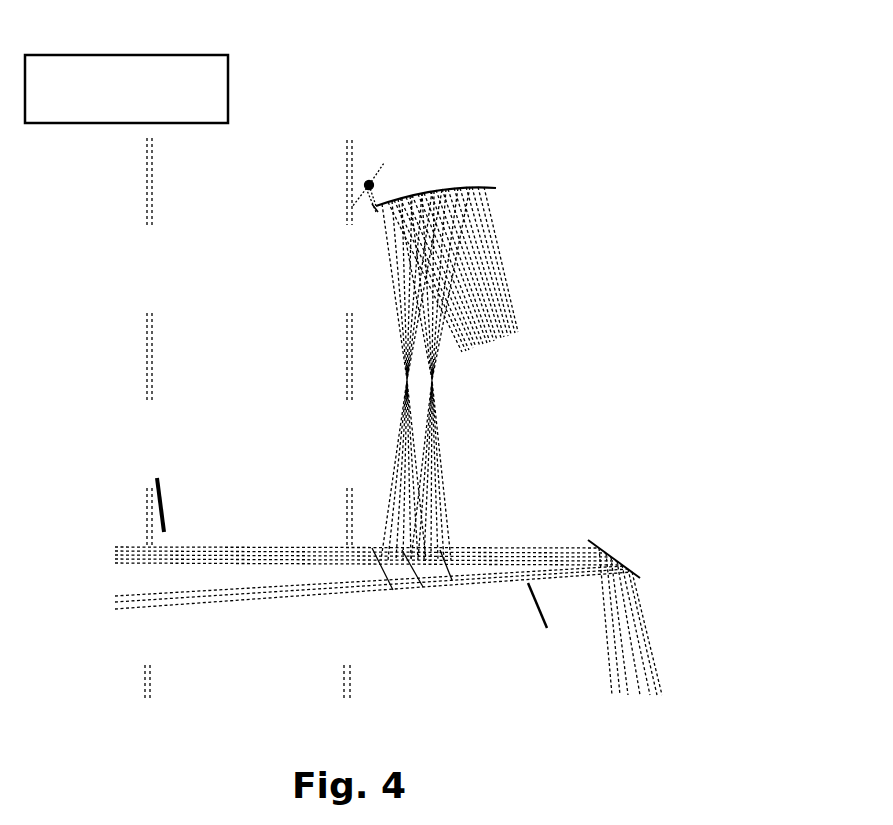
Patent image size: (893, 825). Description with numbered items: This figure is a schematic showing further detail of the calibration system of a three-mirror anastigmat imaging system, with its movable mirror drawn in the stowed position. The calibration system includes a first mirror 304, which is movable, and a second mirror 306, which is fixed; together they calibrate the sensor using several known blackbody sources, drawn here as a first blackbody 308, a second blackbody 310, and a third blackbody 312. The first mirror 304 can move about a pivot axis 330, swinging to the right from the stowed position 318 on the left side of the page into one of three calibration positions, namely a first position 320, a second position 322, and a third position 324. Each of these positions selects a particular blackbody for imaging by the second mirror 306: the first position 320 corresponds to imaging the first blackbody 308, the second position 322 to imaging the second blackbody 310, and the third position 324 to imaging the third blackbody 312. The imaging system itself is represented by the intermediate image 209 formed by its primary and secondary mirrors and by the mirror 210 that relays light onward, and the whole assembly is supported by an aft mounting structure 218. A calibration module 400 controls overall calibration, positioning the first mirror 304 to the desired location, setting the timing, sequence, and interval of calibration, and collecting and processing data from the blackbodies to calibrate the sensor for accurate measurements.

The calibration module 400 is at (157, 89).
The aft mounting structure 218 is at (249, 202).
The stowed position 318 is at (249, 430).
The first mirror 304 is at (327, 576).
The pivot axis 330 is at (382, 174).
The second mirror 306 is at (442, 188).
The first blackbody 308 is at (448, 373).
The second blackbody 310 is at (475, 287).
The third blackbody 312 is at (482, 274).
The intermediate image 209 is at (373, 606).
The mirror 210 is at (633, 617).
The first position 320 is at (470, 581).
The second position 322 is at (430, 587).
The third position 324 is at (383, 586).